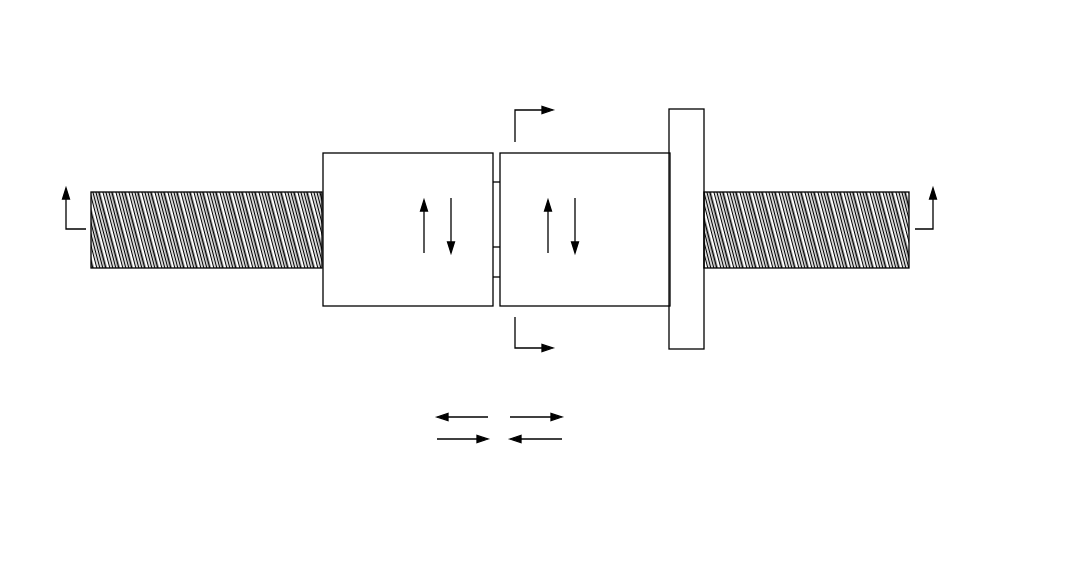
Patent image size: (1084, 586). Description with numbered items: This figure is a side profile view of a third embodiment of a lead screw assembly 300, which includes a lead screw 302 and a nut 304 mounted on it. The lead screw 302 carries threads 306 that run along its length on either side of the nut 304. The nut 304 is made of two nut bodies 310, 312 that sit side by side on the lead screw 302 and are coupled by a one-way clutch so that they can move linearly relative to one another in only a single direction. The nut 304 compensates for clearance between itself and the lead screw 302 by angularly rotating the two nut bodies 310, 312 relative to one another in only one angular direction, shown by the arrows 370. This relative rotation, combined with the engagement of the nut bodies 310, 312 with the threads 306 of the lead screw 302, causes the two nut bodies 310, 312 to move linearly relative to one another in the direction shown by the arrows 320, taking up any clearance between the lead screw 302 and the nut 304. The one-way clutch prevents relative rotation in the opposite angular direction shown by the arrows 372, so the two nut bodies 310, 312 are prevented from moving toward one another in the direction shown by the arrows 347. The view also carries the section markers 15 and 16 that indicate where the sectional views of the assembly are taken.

The lead screw assembly 300 is at (668, 59).
The lead screw 302 is at (193, 191).
The nut 304 is at (439, 109).
The threads 306 is at (220, 269).
The nut body 310 is at (391, 357).
The nut body 312 is at (654, 370).
The arrows 320 is at (475, 415).
The arrows 347 is at (448, 442).
The arrows 370 is at (575, 222).
The arrows 372 is at (447, 214).
The section line 15 is at (501, 195).
The section line 16 is at (549, 229).